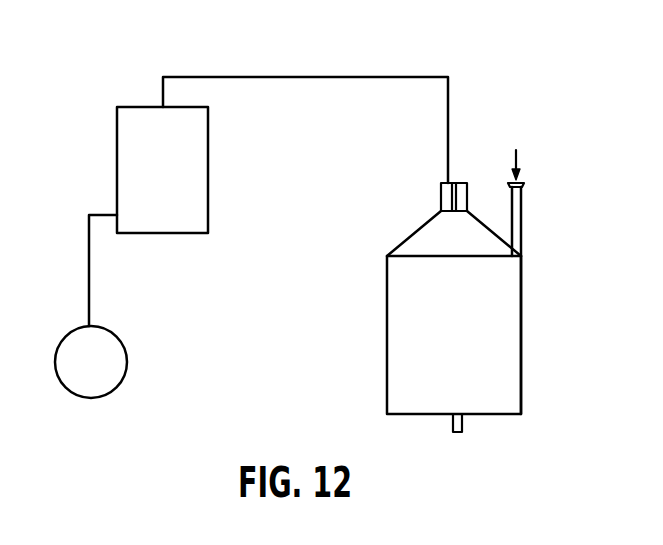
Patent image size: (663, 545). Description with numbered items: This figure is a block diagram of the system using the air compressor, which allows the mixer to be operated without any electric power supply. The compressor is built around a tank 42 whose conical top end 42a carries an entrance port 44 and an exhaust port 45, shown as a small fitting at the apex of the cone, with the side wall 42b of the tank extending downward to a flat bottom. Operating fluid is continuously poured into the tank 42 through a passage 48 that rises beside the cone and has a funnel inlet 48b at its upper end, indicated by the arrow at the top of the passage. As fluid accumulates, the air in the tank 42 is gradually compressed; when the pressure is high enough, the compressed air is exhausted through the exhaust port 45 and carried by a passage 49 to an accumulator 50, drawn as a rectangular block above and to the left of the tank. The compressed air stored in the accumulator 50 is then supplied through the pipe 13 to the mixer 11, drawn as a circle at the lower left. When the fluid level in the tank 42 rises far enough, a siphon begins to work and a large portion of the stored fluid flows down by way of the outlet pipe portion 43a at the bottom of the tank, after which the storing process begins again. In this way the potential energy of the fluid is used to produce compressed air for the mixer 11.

The mixer 11 is at (117, 360).
The pipe 13 is at (88, 286).
The tank 42 is at (386, 343).
The conical top end 42a is at (428, 233).
The side wall of tank 42b is at (510, 328).
The outlet pipe portion 43a is at (463, 425).
The entrance port 44 is at (462, 183).
The exhaust port 45 is at (445, 183).
The passage 48 is at (522, 232).
The funnel inlet 48b is at (524, 184).
The passage 49 is at (399, 75).
The accumulator 50 is at (197, 165).